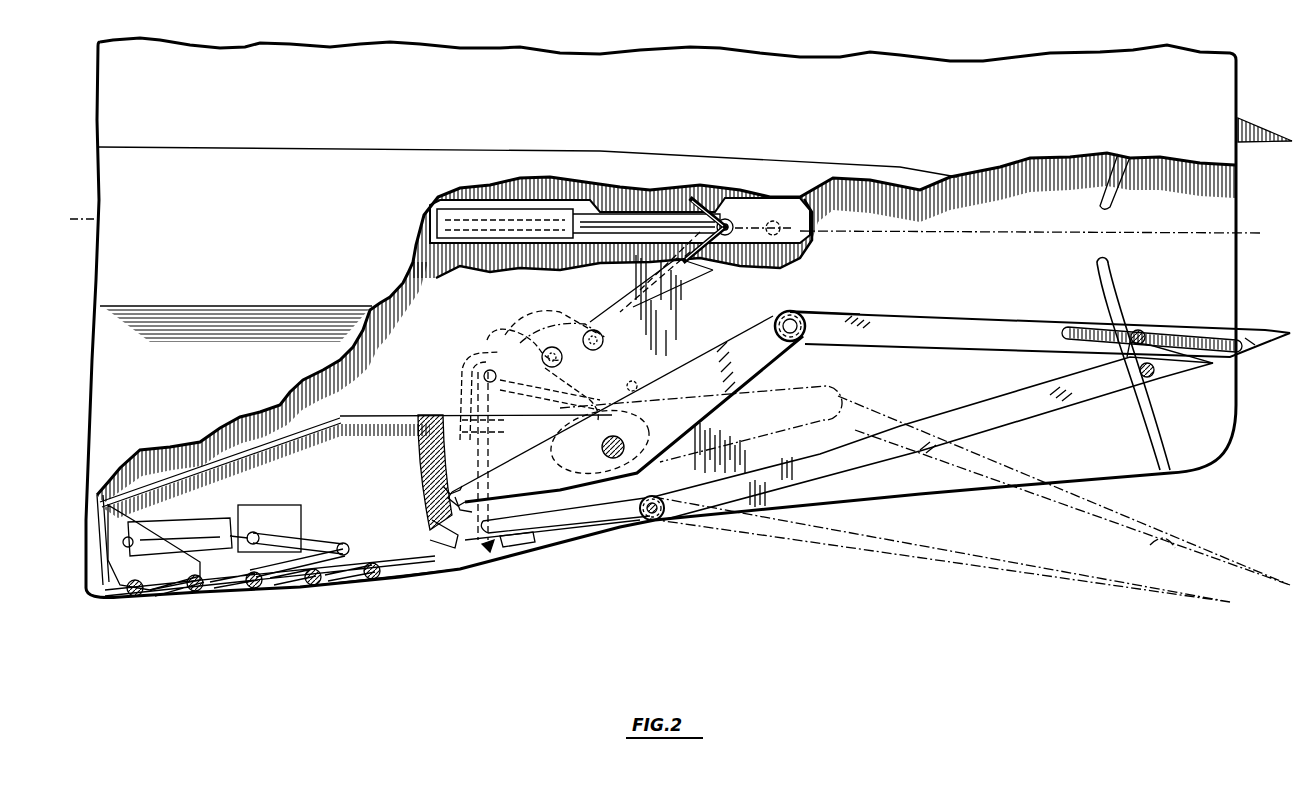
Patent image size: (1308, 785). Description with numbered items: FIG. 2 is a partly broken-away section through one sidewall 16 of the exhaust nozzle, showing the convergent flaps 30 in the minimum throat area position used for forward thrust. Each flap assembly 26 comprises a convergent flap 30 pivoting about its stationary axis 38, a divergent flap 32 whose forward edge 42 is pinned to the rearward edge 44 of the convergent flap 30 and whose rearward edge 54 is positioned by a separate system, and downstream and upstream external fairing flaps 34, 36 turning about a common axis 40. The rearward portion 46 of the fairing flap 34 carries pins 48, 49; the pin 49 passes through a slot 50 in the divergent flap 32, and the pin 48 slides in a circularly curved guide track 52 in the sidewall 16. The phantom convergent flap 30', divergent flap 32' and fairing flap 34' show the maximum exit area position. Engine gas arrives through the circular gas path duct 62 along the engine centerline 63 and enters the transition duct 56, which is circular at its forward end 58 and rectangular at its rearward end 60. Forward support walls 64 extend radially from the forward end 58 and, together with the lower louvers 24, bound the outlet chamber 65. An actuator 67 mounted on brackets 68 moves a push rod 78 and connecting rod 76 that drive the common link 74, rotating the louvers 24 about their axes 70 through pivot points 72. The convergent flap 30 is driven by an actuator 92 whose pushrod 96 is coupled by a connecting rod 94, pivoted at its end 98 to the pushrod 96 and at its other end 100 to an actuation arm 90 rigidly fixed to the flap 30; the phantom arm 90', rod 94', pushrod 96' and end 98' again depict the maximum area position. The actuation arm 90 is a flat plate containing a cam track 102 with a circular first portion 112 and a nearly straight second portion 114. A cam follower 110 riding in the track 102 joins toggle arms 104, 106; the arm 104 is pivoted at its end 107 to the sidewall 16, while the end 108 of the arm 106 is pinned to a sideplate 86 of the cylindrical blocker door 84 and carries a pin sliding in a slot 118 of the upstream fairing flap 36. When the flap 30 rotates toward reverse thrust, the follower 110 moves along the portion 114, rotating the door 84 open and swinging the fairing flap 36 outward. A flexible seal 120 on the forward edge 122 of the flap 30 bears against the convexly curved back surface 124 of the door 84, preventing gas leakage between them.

The sidewall 16 is at (1222, 415).
The lower set of louvers 24 is at (398, 578).
The flap assembly 26 is at (1259, 150).
The convergent flap 30 is at (625, 411).
The convergent flap (maximum exit area position) 30' is at (701, 413).
The divergent flap 32 is at (1040, 326).
The divergent flap (maximum exit area position) 32' is at (1064, 490).
The downstream external fairing flap 34 is at (933, 438).
The downstream external fairing flap (maximum exit area position) 34' is at (940, 549).
The upstream external fairing flap 36 is at (638, 522).
The stationary axis 38 is at (602, 448).
The common axis 40 is at (652, 515).
The forward edge 42 is at (810, 320).
The rearward edge 44 is at (774, 322).
The rearward portion 46 is at (1172, 368).
The pin 48 is at (1139, 371).
The pin 49 is at (1145, 331).
The slot 50 is at (1205, 352).
The guide track 52 is at (1098, 268).
The rearward edge 54 is at (1252, 342).
The engine gas path transition duct 56 is at (268, 455).
The forward end 58 is at (118, 466).
The rearward end 60 is at (363, 408).
The circular gas path duct 62 is at (97, 497).
The engine centerline 63 is at (1250, 232).
The forward support wall 64 is at (118, 506).
The outlet chamber 65 is at (346, 476).
The actuator 67 is at (182, 525).
The bracket 68 is at (135, 535).
The louver axis 70 is at (312, 585).
The pivot point 72 is at (188, 568).
The common moveable link 74 is at (266, 570).
The connecting rod 76 is at (322, 548).
The push rod 78 is at (252, 530).
The blocker door 84 is at (417, 458).
The sideplate 86 is at (468, 545).
The actuation arm 90 is at (552, 310).
The actuation arm (maximum exit area position) 90' is at (563, 312).
The actuator 92 is at (515, 225).
The connecting rod 94 is at (668, 237).
The connecting rod (maximum exit area position) 94' is at (667, 305).
The pushrod 96 is at (646, 246).
The pushrod (maximum exit area position) 96' is at (764, 254).
The end of connecting rod 98 is at (738, 198).
The end of connecting rod (maximum exit area position) 98' is at (803, 239).
The end of connecting rod 100 is at (575, 358).
The cam track 102 is at (500, 428).
The toggle arm 104 is at (575, 392).
The toggle arm 106 is at (500, 392).
The end of toggle arm 107 is at (622, 384).
The end of toggle arm 108 is at (492, 552).
The cam follower 110 is at (494, 378).
The first portion of cam track 112 is at (460, 386).
The second portion of cam track 114 is at (504, 340).
The slot 118 is at (535, 540).
The flexible seal 120 is at (458, 482).
The forward edge 122 is at (474, 507).
The convexly curved back surface 124 is at (428, 516).